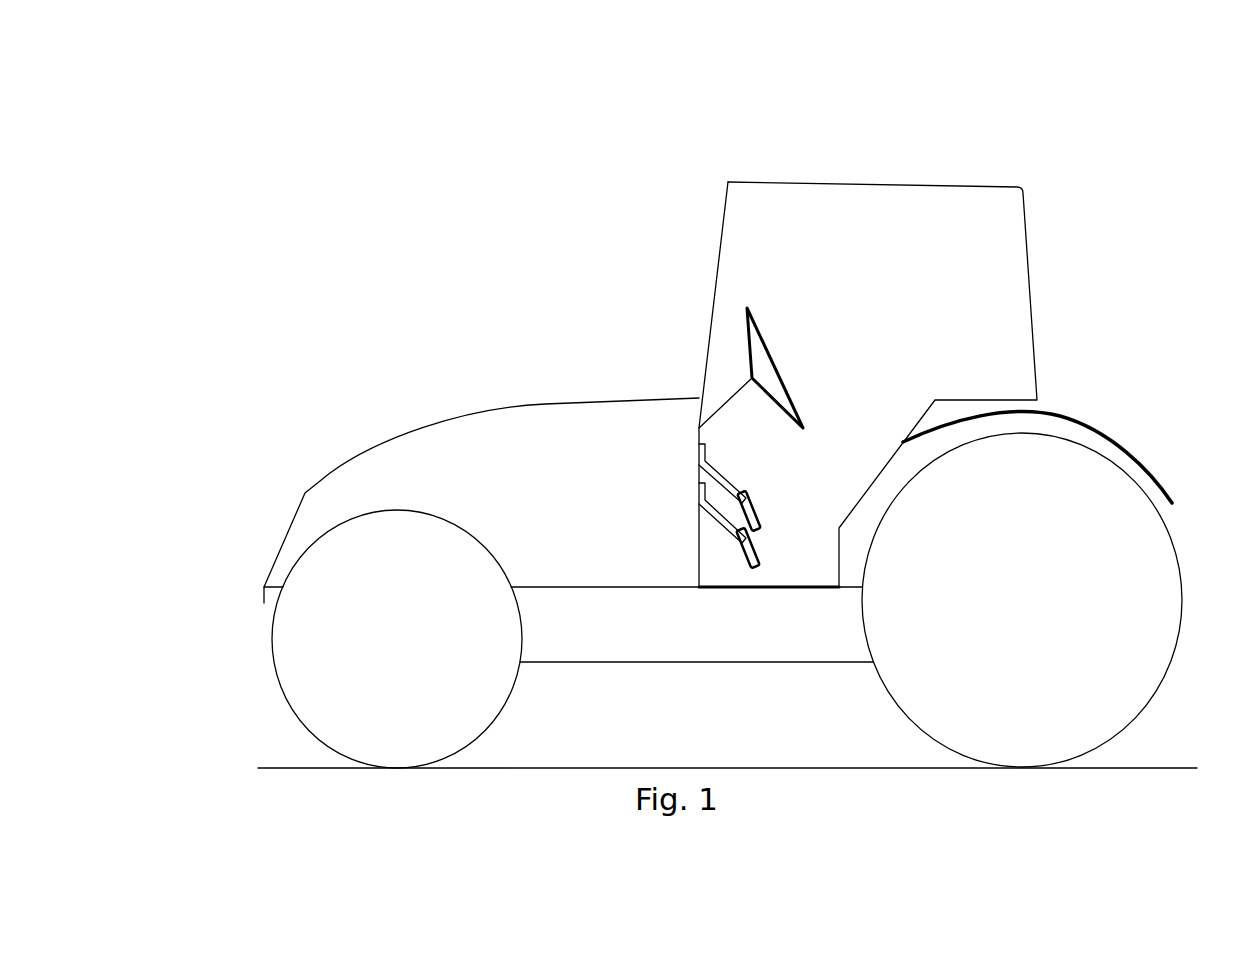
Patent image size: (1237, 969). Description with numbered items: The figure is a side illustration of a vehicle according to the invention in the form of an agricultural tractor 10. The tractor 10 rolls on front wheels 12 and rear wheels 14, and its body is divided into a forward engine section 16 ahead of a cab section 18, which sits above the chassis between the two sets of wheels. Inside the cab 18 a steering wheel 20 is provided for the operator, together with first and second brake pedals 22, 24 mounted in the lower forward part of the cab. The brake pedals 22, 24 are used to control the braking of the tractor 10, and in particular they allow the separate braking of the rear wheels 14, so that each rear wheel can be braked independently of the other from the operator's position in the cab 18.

The tractor 10 is at (705, 476).
The front wheels 12 is at (390, 748).
The rear wheels 14 is at (1053, 725).
The forward engine section 16 is at (417, 445).
The cab section 18 is at (983, 275).
The steering wheel 20 is at (745, 343).
The first brake pedal 22 is at (693, 457).
The second brake pedal 24 is at (693, 503).